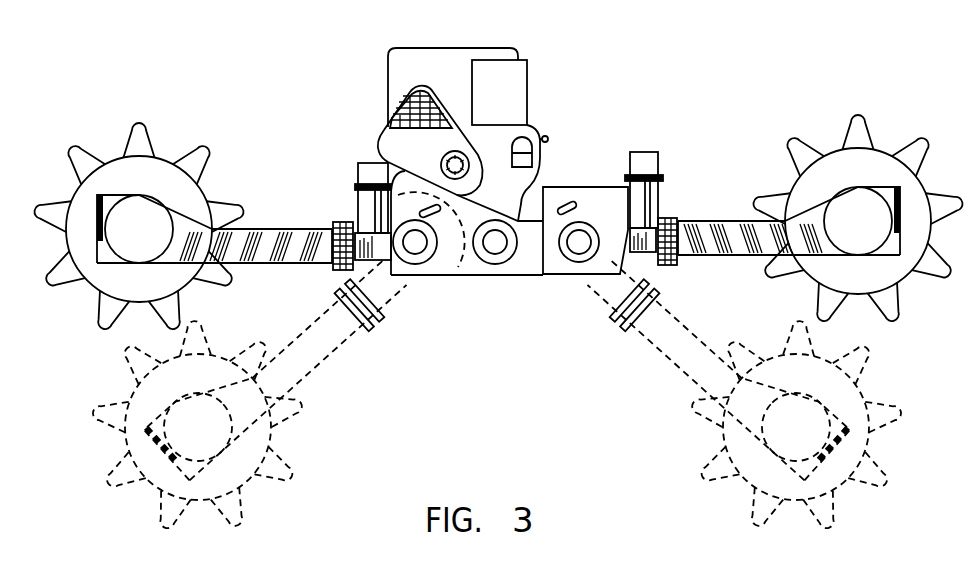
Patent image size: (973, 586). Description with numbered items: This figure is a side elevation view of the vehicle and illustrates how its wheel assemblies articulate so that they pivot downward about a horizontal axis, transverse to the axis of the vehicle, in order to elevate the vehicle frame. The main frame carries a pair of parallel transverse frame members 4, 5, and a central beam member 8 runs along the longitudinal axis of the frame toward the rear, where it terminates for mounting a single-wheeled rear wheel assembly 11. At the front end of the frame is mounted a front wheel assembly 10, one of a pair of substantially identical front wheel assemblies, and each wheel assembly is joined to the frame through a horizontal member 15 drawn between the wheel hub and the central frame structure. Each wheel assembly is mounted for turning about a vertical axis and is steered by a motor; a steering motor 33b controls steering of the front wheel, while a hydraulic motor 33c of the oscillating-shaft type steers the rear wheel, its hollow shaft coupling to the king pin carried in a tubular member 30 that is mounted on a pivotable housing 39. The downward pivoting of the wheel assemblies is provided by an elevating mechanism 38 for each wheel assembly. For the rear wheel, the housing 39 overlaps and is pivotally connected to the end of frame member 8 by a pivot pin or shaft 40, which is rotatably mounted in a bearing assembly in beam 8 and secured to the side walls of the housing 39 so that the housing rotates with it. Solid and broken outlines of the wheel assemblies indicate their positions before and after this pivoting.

The front wheel assembly 10 is at (147, 109).
The rear wheel assembly 11 is at (893, 105).
The drive shaft 15 is at (312, 227).
The steering motor 33b is at (360, 165).
The hydraulic motor 33c is at (645, 152).
The tubular member 30 is at (652, 203).
The elevating mechanism 38 is at (557, 152).
The housing 39 is at (590, 193).
The pivot pin or shaft 40 is at (579, 248).
The transverse frame member 4 is at (415, 250).
The transverse frame member 5 is at (495, 250).
The central beam member 8 is at (530, 265).